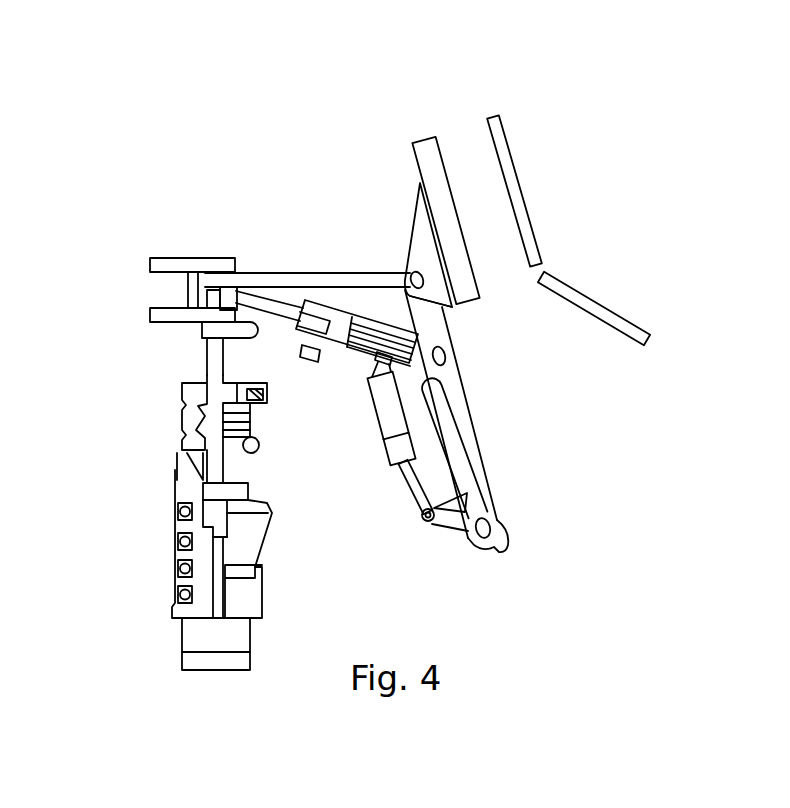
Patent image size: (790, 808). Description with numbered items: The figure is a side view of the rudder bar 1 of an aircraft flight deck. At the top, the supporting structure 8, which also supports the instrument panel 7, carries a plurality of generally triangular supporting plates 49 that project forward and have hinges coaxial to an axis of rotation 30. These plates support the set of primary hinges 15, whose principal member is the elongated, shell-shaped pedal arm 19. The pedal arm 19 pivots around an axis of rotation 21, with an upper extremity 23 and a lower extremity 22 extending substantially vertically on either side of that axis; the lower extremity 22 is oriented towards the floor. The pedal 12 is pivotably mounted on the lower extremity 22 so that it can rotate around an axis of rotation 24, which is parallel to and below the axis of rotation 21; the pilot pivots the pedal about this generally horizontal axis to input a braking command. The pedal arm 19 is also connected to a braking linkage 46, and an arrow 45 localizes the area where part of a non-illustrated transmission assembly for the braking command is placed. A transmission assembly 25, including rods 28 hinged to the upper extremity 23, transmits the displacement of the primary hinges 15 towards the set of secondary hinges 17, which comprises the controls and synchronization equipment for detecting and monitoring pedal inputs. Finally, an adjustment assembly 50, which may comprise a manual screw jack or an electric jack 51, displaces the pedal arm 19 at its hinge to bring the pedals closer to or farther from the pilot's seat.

The rudder bar 1 is at (170, 154).
The instrument panel 7 is at (475, 104).
The supporting structure 8 is at (421, 140).
The pedal 12 is at (423, 521).
The set of primary hinges 15 is at (505, 397).
The set of secondary hinges 17 is at (166, 369).
The pedal arm 19 is at (441, 333).
The axis of rotation 21 is at (451, 353).
The lower extremity 22 is at (517, 551).
The upper extremity 23 is at (461, 318).
The axis of rotation 24 is at (472, 537).
The transmission assembly 25 is at (296, 243).
The rod 28 is at (264, 264).
The axis of rotation 30 is at (420, 278).
The arrow 45 is at (353, 399).
The braking linkage 46 is at (386, 441).
The supporting plate 49 is at (418, 232).
The adjustment assembly 50 is at (330, 296).
The jack 51 is at (312, 364).